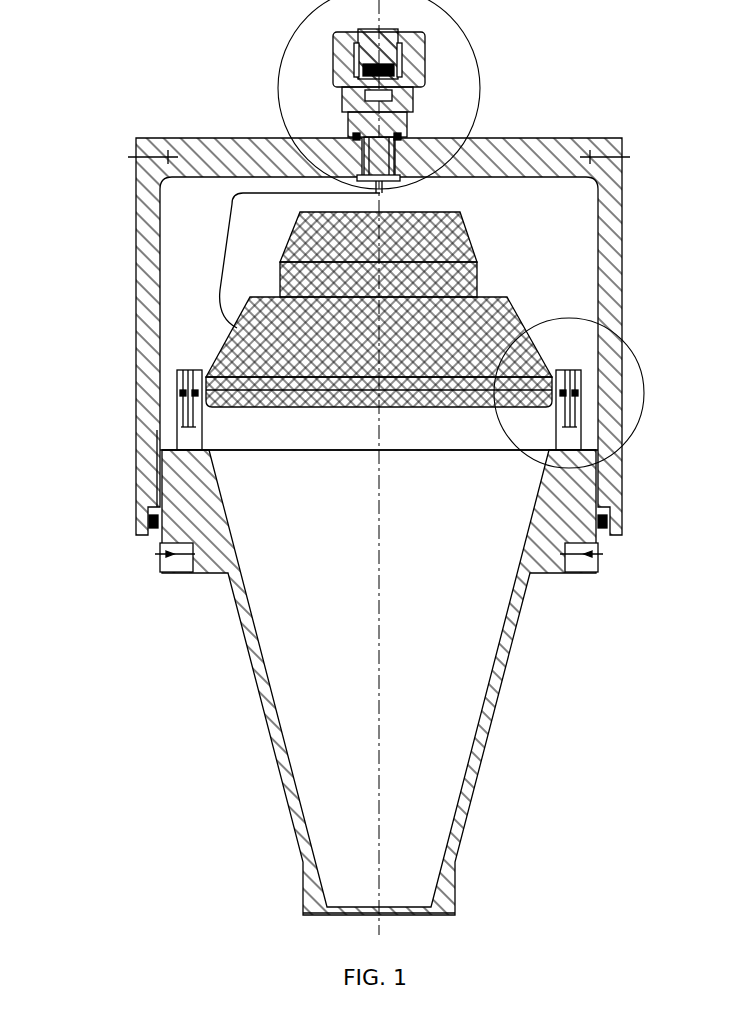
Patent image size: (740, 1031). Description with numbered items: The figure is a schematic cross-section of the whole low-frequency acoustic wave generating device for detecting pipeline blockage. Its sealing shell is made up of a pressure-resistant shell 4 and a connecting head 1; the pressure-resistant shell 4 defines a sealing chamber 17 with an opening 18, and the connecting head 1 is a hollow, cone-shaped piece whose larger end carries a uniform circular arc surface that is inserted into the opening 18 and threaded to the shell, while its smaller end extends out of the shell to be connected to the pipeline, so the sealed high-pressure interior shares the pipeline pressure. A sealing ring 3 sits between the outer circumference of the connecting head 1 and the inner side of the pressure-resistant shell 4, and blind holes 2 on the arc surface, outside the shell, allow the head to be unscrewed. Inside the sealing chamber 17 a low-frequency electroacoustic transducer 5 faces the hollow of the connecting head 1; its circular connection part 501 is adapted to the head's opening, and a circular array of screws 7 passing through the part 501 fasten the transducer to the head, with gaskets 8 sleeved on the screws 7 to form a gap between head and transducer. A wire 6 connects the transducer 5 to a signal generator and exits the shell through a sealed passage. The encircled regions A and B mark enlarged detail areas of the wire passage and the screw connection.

The detail view A (fastening bolt) A is at (278, 88).
The detail view B (clamp connection) B is at (632, 352).
The connecting head 1 is at (258, 682).
The blind hole 2 is at (160, 572).
The sealing ring 3 is at (150, 532).
The pressure-resistant shell 4 is at (145, 445).
The low-frequency electroacoustic transducer 5 is at (240, 348).
The circular connection part 501 is at (178, 383).
The wire 6 is at (213, 302).
The screw 7 is at (628, 436).
The gasket 8 is at (580, 393).
The sealing chamber 17 is at (423, 608).
The opening 18 is at (600, 540).